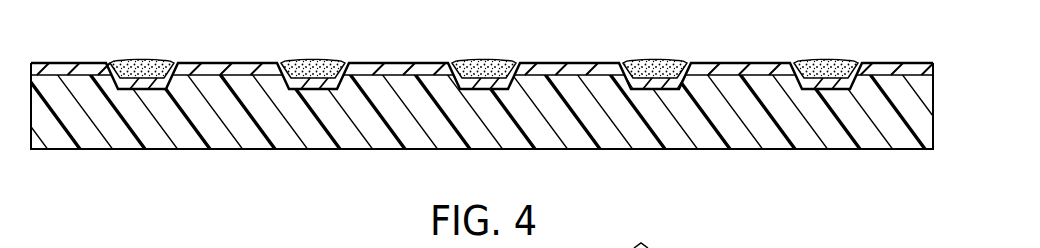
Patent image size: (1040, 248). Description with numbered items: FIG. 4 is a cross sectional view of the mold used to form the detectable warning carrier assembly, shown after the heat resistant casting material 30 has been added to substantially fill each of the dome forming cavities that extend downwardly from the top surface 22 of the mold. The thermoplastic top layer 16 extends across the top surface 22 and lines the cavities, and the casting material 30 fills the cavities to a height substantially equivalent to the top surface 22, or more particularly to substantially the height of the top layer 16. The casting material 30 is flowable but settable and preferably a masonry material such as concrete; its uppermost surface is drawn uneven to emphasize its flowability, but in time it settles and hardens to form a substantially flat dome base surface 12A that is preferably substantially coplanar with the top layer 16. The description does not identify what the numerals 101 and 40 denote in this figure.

The substrate structure 101 is at (511, 79).
The top layer 16 is at (767, 62).
The top surface 22 is at (392, 72).
The interface surface 40 is at (548, 68).
The dome base surface 12A is at (642, 62).
The heat resistant casting material 30 is at (832, 60).